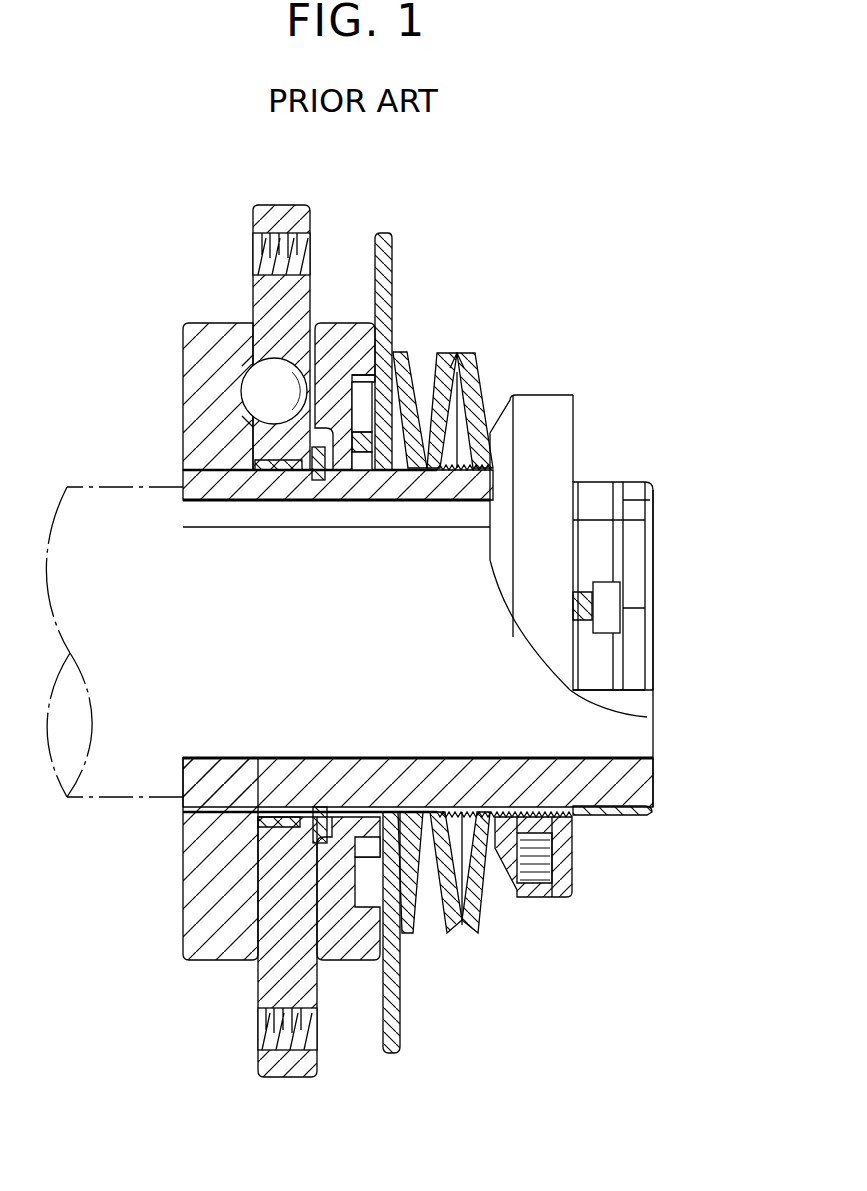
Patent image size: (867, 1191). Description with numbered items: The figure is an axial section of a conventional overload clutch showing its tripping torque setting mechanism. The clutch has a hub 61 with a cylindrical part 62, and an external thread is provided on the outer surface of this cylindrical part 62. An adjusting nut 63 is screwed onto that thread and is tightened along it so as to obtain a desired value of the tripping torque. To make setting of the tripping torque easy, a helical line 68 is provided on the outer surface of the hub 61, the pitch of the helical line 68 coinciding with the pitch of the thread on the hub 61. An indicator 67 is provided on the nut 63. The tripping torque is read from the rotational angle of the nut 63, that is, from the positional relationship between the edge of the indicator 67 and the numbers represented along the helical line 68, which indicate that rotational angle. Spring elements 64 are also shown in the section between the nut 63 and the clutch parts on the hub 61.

The hub 61 is at (653, 803).
The cylindrical part 62 is at (643, 775).
The adjusting nut 63 is at (541, 408).
The conical spring washers 64 is at (477, 370).
The indicator 67 is at (607, 620).
The helical line 68 is at (623, 500).